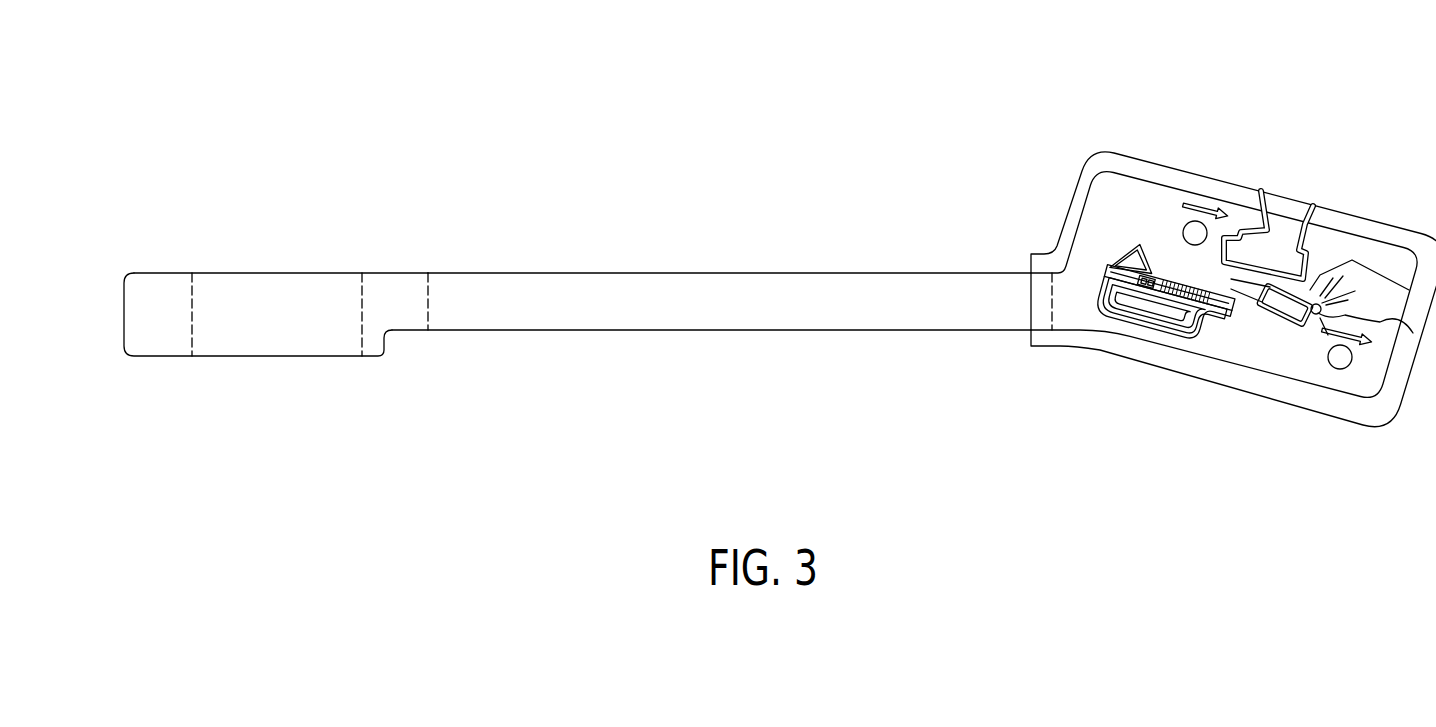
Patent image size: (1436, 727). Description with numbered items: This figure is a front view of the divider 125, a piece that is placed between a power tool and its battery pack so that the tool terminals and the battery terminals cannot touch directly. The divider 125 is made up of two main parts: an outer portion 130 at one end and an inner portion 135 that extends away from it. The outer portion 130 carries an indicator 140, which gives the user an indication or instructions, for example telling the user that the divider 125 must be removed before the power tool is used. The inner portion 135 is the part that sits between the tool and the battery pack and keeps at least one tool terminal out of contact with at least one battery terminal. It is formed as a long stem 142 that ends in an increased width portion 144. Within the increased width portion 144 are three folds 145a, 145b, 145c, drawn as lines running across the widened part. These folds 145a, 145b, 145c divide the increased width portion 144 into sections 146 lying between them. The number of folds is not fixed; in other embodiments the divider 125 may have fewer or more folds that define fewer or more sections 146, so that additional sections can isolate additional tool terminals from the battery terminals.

The divider 125 is at (424, 106).
The outer portion 130 is at (1316, 137).
The inner portion 135 is at (128, 221).
The indicator 140 is at (1319, 396).
The long stem 142 is at (679, 283).
The increased width portion 144 is at (264, 272).
The fold 145a is at (192, 318).
The fold 145b is at (362, 318).
The fold 145c is at (428, 318).
The sections 146 is at (155, 289).